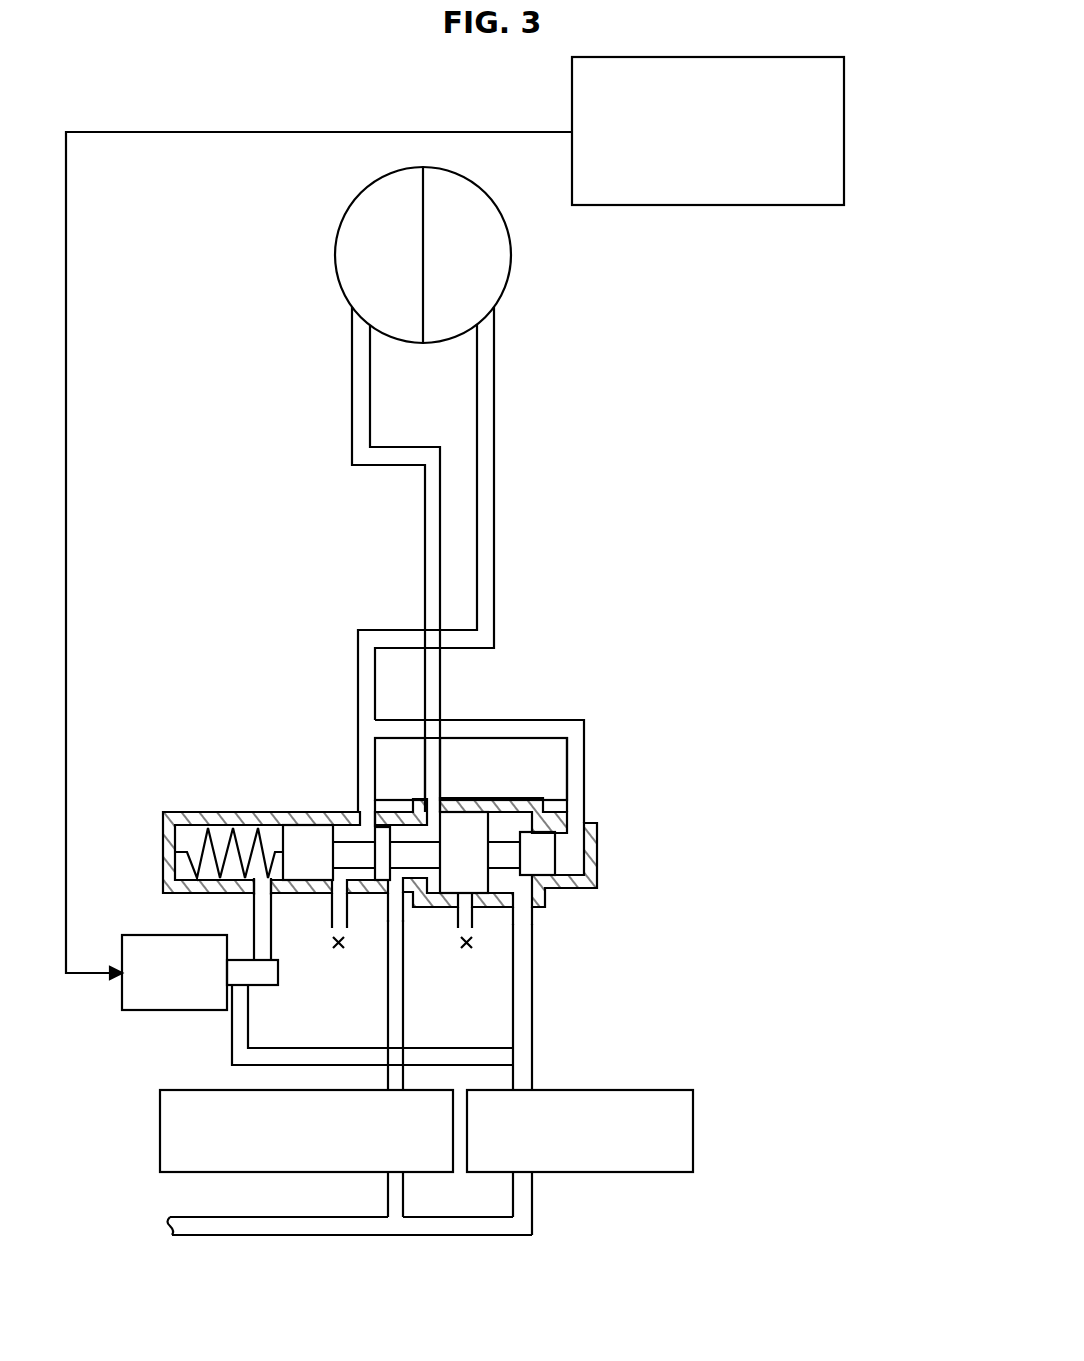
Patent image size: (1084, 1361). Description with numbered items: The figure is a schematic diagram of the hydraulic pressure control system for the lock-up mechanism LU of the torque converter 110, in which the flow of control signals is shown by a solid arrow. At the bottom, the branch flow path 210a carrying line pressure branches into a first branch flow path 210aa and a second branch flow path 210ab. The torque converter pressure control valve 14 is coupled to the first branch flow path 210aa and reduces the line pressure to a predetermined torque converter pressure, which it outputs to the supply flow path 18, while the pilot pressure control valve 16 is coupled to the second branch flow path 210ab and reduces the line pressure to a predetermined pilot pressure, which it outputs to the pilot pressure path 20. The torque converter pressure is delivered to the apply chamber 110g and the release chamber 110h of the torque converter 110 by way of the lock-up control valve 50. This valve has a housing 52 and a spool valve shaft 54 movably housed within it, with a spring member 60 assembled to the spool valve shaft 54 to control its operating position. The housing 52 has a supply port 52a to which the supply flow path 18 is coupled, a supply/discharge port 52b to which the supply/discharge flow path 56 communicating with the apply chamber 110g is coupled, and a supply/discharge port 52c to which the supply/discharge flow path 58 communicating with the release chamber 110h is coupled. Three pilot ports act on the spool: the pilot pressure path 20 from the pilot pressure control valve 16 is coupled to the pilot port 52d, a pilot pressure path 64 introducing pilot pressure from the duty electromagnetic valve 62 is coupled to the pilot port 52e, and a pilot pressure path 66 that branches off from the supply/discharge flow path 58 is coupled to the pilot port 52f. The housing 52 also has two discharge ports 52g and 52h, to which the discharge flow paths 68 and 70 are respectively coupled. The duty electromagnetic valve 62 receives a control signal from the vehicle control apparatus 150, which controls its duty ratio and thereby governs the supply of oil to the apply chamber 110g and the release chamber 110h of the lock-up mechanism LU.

The vehicle control apparatus 150 is at (828, 87).
The torque converter 110 is at (417, 247).
The apply chamber 110g is at (337, 258).
The release chamber 110h is at (512, 258).
The lock-up mechanism LU is at (475, 182).
The supply/discharge flow path 56 is at (425, 588).
The supply/discharge flow path 58 is at (494, 588).
The pilot pressure path 66 is at (510, 720).
The supply/discharge port 52c is at (377, 804).
The supply/discharge port 52b is at (437, 797).
The spool valve shaft 54 is at (500, 846).
The pilot port 52f is at (583, 818).
The lock-up control valve 50 is at (356, 868).
The housing 52 is at (359, 868).
The spring member 60 is at (195, 852).
The pilot port 52e is at (253, 890).
The pilot pressure path 64 is at (253, 915).
The duty electromagnetic valve 62 is at (145, 995).
The discharge port 52g is at (336, 898).
The discharge flow path 68 is at (329, 934).
The supply port 52a is at (394, 895).
The discharge port 52h is at (466, 902).
The discharge flow path 70 is at (468, 940).
The pilot port 52d is at (533, 924).
The pilot pressure path 20 is at (525, 950).
The supply flow path 18 is at (397, 1020).
The torque converter pressure control valve 14 is at (160, 1153).
The pilot pressure control valve 16 is at (693, 1150).
The first branch flow path 210aa is at (388, 1190).
The second branch flow path 210ab is at (532, 1190).
The branch flow path 210a is at (455, 1236).